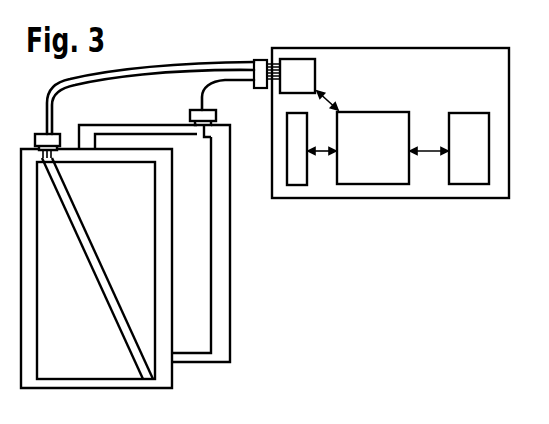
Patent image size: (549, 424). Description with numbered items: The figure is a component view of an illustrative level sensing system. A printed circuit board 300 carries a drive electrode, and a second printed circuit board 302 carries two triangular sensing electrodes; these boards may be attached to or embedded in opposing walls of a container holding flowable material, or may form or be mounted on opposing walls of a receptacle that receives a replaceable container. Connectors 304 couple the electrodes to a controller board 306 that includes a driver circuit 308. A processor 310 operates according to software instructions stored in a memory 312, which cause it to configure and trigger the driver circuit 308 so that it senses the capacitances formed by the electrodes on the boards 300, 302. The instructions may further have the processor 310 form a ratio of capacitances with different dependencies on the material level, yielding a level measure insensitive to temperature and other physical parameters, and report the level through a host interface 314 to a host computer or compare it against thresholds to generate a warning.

The printed circuit board 300 is at (217, 362).
The second printed circuit board 302 is at (155, 388).
The connectors 304 is at (188, 112).
The controller board 306 is at (406, 50).
The driver circuit 308 is at (315, 58).
The processor 310 is at (361, 178).
The memory 312 is at (301, 178).
The host interface 314 is at (462, 178).